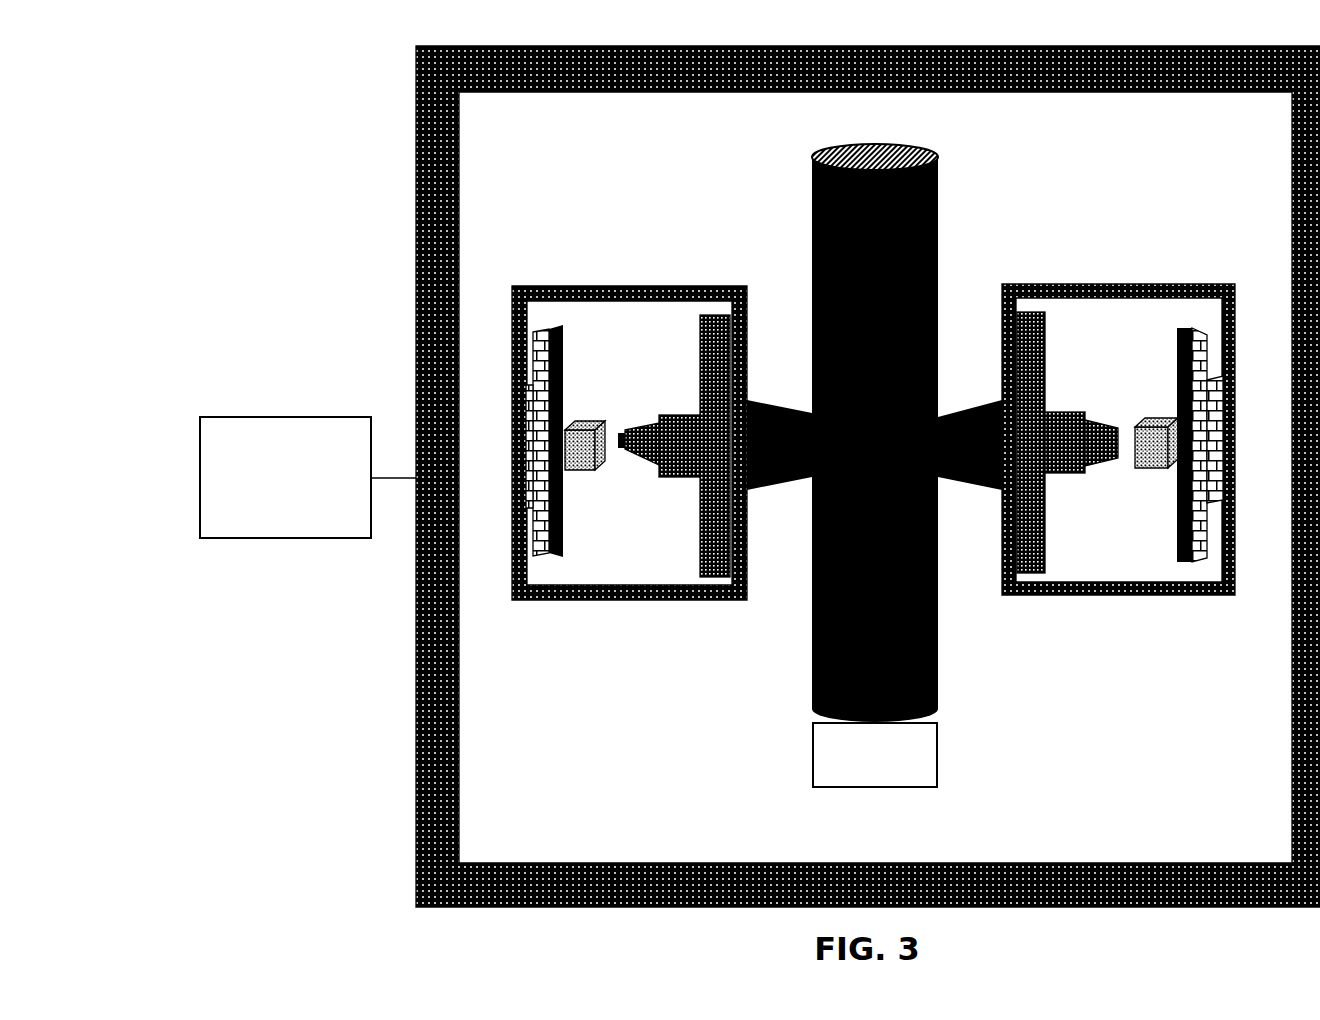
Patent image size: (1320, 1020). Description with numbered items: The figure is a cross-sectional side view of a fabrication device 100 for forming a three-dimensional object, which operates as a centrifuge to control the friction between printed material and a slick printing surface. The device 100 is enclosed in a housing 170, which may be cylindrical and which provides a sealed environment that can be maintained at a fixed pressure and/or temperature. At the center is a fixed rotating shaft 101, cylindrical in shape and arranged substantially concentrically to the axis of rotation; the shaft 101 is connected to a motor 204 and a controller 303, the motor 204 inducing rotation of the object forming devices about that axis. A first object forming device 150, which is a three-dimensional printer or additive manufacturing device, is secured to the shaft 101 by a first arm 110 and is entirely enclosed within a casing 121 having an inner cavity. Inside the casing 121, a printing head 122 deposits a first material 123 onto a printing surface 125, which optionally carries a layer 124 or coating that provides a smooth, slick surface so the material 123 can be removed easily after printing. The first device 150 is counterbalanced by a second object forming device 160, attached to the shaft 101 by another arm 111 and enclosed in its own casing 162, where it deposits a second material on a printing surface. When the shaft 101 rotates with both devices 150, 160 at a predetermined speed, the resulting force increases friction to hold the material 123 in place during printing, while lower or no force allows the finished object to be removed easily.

The device 100 is at (804, 474).
The housing 170 is at (416, 245).
The controller 303 is at (268, 490).
The fixed rotating shaft 101 is at (857, 450).
The motor 204 is at (854, 767).
The arm 110 is at (758, 457).
The arm 111 is at (954, 457).
The object forming device 150 is at (629, 393).
The second object forming device 160 is at (1118, 394).
The casing 121 is at (662, 287).
The casing 162 is at (1075, 284).
The printing head 122 is at (623, 430).
The material 123 is at (583, 423).
The layer 124 is at (563, 342).
The printing surface 125 is at (543, 557).